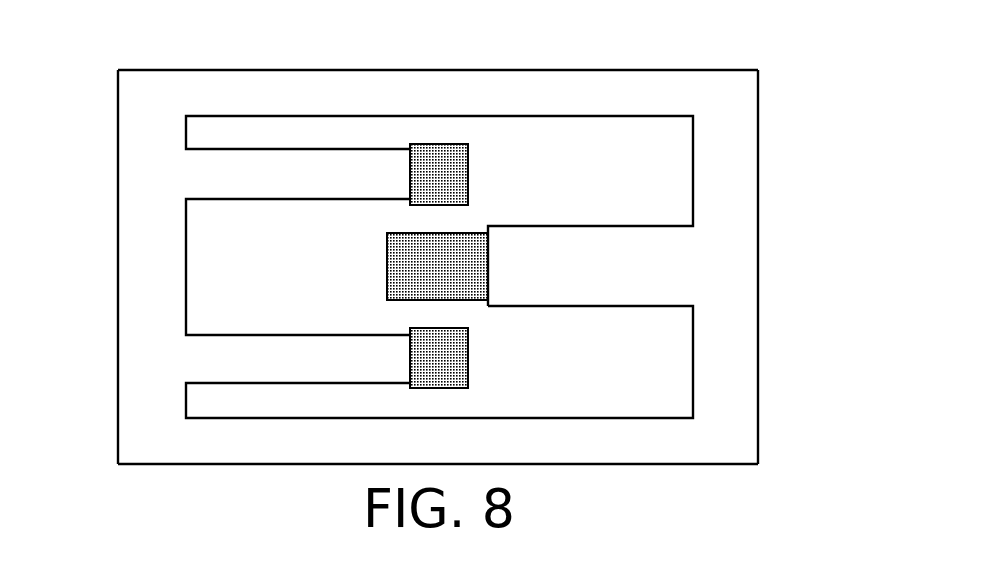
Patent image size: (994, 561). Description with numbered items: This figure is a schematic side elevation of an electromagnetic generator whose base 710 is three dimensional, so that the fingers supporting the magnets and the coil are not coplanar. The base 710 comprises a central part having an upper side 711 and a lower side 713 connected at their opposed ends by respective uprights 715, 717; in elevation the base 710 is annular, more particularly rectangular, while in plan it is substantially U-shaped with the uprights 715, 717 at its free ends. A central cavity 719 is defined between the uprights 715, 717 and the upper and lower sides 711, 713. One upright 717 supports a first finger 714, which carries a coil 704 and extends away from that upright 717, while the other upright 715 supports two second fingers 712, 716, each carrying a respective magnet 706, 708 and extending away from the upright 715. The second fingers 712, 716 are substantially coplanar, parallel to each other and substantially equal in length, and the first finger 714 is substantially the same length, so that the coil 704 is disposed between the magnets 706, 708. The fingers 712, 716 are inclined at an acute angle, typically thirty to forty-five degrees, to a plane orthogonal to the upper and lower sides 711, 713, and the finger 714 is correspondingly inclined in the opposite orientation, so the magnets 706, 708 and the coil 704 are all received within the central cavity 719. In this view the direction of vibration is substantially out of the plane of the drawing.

The coil 704 is at (387, 268).
The magnet 706 is at (468, 175).
The magnet 708 is at (468, 360).
The base 710 is at (745, 118).
The upper side 711 is at (622, 75).
The second finger 712 is at (247, 345).
The lower side 713 is at (625, 455).
The first finger 714 is at (625, 295).
The upright 715 is at (130, 123).
The second finger 716 is at (247, 190).
The upright 717 is at (745, 264).
The central cavity 719 is at (650, 170).